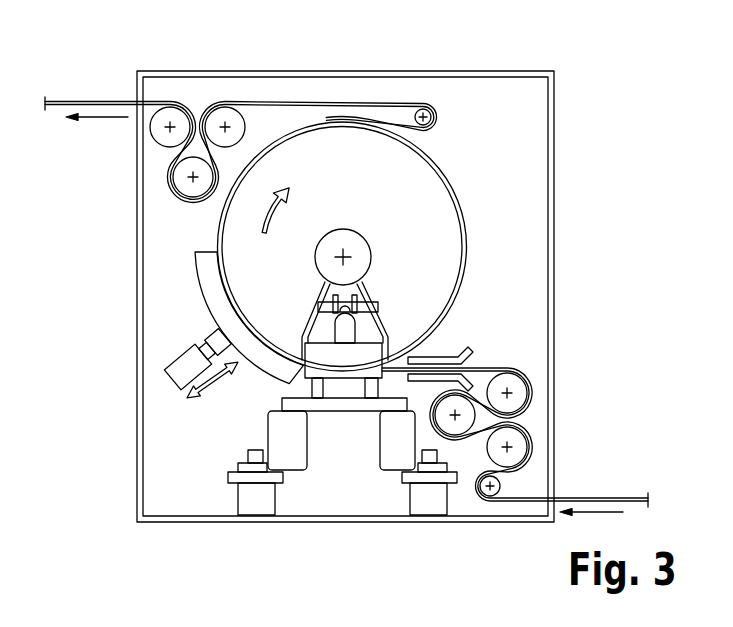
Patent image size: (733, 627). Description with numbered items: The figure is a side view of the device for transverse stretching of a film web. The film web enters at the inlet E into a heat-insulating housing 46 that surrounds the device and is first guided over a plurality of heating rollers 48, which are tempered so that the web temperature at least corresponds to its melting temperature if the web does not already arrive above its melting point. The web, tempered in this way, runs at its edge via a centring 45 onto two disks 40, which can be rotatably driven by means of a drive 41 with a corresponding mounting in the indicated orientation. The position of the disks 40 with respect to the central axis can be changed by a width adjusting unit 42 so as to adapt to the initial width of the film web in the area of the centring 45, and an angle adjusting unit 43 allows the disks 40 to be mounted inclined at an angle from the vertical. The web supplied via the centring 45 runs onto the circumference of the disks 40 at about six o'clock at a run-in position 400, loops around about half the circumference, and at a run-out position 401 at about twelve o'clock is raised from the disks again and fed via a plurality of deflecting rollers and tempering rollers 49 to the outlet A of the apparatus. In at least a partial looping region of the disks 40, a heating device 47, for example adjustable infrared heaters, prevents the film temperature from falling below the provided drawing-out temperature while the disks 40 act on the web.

The disks 40 is at (432, 158).
The drive 41 is at (367, 263).
The width adjusting unit 42 is at (330, 370).
The angle adjusting unit 43 is at (342, 328).
The centring 45 is at (447, 357).
The heat-insulating housing 46 is at (528, 70).
The heating device 47 is at (223, 318).
The heating rollers 48 is at (537, 417).
The deflecting rollers and tempering rollers 49 is at (153, 158).
The run-in position 400 is at (340, 393).
The run-out position 401 is at (345, 114).
The outlet A is at (124, 94).
The inlet E is at (565, 491).